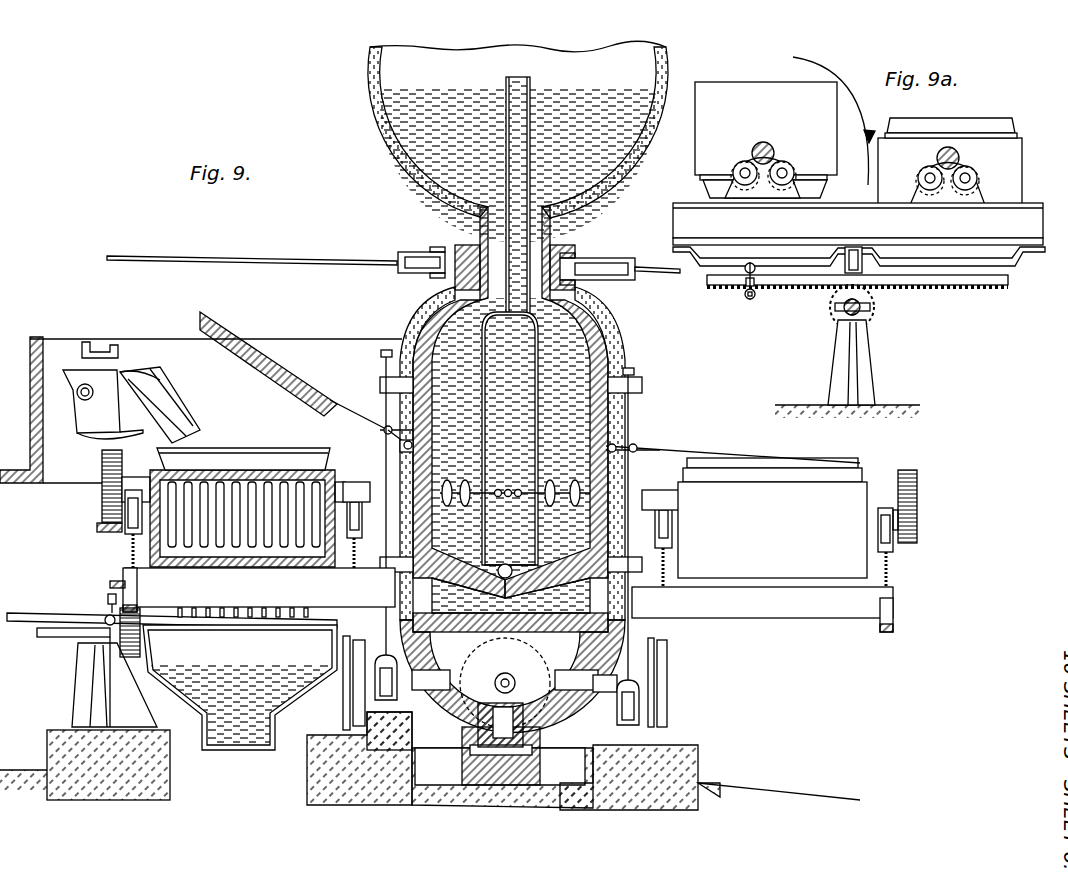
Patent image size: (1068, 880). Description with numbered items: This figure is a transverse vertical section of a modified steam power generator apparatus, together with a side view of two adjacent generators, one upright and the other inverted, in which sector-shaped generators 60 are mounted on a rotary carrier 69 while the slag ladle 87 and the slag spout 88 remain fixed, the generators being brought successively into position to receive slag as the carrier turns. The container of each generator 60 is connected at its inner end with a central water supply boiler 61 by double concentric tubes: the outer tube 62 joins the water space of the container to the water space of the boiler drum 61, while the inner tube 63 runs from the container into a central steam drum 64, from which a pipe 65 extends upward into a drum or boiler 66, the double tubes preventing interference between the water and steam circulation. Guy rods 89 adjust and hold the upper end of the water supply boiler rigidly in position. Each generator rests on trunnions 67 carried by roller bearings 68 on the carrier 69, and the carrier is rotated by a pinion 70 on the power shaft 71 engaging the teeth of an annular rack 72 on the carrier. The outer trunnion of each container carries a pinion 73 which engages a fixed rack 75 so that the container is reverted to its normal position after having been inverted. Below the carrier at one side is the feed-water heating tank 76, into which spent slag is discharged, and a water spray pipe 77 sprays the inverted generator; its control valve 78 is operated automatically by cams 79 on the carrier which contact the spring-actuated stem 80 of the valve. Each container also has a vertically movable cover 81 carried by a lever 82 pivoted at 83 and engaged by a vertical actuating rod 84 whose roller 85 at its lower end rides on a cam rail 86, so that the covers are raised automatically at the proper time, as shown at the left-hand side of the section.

In FIG. 9, the generator 60 is at (285, 545).
In FIG. 9A, the generator 60 is at (1037, 162).
In FIG. 9, the water supply boiler 61 is at (620, 413).
In FIG. 9, the outer tube 62 is at (365, 486).
In FIG. 9, the inner tube 63 is at (466, 488).
In FIG. 9, the steam drum 64 is at (548, 407).
In FIG. 9, the pipe 65 is at (514, 84).
In FIG. 9, the drum 66 is at (371, 81).
In FIG. 9, the trunnion 67 is at (131, 487).
In FIG. 9A, the trunnion 67 is at (790, 143).
In FIG. 9, the roller bearing 68 is at (128, 510).
In FIG. 9A, the roller bearing 68 is at (790, 170).
In FIG. 9, the rotary carrier 69 is at (776, 612).
In FIG. 9A, the rotary carrier 69 is at (858, 224).
In FIG. 9, the pinion 70 is at (126, 657).
In FIG. 9A, the pinion 70 is at (872, 302).
In FIG. 9, the power shaft 71 is at (50, 636).
In FIG. 9A, the power shaft 71 is at (866, 322).
In FIG. 9, the annular rack 72 is at (139, 606).
In FIG. 9A, the annular rack 72 is at (950, 290).
In FIG. 9, the pinion 73 is at (104, 503).
In FIG. 9, the fixed rack 75 is at (105, 531).
In FIG. 9A, the fixed rack 75 is at (792, 278).
In FIG. 9, the feed-water heating tank 76 is at (240, 687).
In FIG. 9, the water spray pipe 77 is at (35, 616).
In FIG. 9A, the water spray pipe 77 is at (750, 300).
In FIG. 9, the control valve 78 is at (100, 632).
In FIG. 9, the cam 79 is at (110, 584).
In FIG. 9, the spring-actuated stem 80 is at (108, 600).
In FIG. 9A, the spring-actuated stem 80 is at (748, 292).
In FIG. 9, the cover 81 is at (272, 368).
In FIG. 9, the lever 82 is at (364, 417).
In FIG. 9, the pivot 83 is at (402, 446).
In FIG. 9, the vertical actuating rod 84 is at (384, 577).
In FIG. 9, the roller 85 is at (392, 700).
In FIG. 9, the cam rail 86 is at (420, 713).
In FIG. 9, the slag ladle 87 is at (103, 404).
In FIG. 9, the slag spout 88 is at (178, 418).
In FIG. 9, the guy rod 89 is at (318, 262).